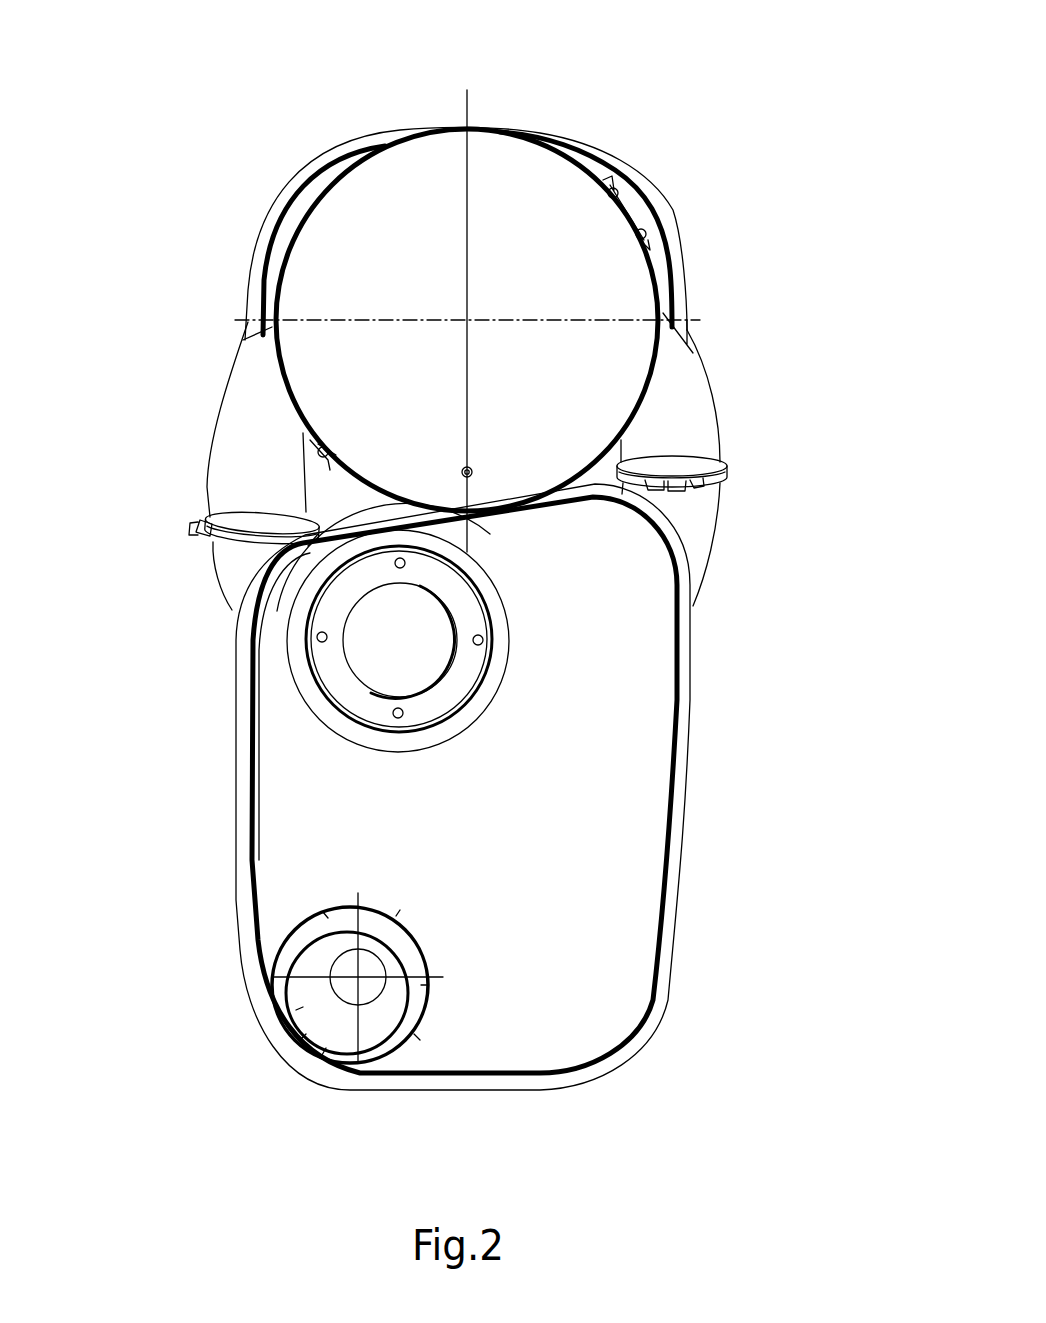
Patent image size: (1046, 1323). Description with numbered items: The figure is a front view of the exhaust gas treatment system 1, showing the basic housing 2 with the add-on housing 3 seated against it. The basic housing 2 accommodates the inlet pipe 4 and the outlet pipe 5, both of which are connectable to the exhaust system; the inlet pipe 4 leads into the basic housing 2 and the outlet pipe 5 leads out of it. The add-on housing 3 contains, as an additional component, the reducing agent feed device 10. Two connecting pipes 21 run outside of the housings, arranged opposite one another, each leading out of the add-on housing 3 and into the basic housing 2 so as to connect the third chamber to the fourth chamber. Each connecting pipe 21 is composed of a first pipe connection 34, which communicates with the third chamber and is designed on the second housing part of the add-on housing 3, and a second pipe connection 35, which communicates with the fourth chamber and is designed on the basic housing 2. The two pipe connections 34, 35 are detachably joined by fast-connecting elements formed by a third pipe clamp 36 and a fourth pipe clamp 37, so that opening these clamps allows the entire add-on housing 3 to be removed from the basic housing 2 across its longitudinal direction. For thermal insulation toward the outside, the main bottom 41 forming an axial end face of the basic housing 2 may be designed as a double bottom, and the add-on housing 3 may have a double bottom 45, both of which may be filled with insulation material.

The exhaust gas treatment system 1 is at (814, 85).
The basic housing 2 is at (682, 994).
The add-on housing 3 is at (436, 122).
The inlet pipe 4 is at (393, 627).
The outlet pipe 5 is at (342, 983).
The reducing agent feed device 10 is at (471, 468).
The connecting pipe 21 is at (466, 502).
The first pipe connection 34 is at (250, 405).
The second pipe connection 35 is at (240, 577).
The third pipe clamp 36 is at (232, 545).
The fourth pipe clamp 37 is at (722, 473).
The main bottom 41 is at (613, 953).
The double bottom 45 is at (507, 173).